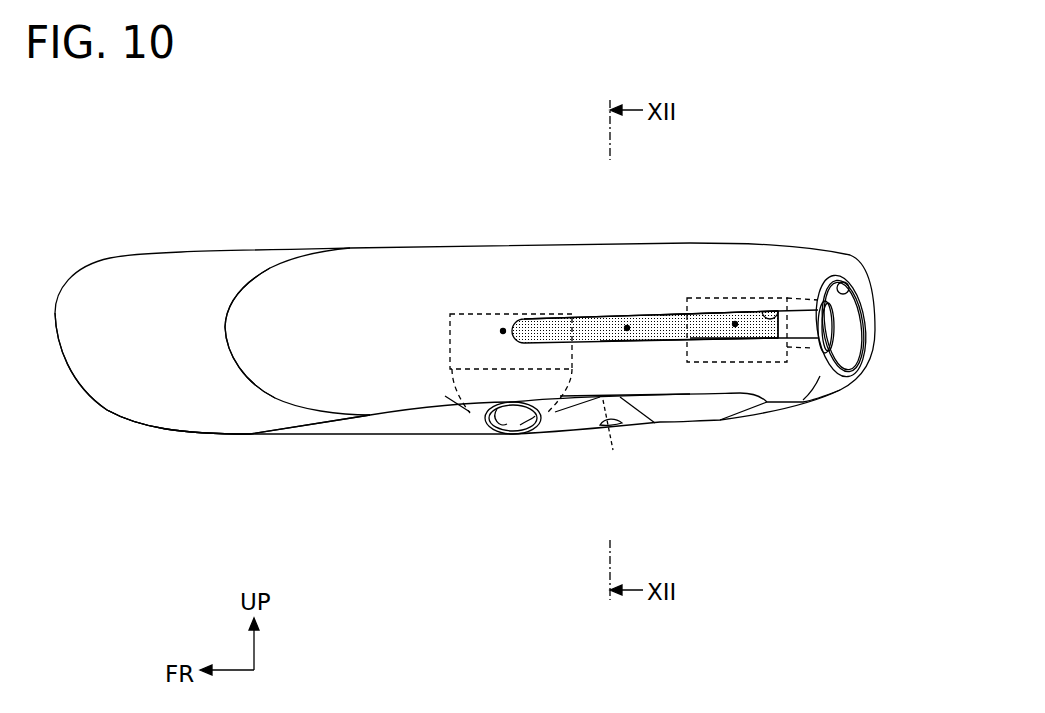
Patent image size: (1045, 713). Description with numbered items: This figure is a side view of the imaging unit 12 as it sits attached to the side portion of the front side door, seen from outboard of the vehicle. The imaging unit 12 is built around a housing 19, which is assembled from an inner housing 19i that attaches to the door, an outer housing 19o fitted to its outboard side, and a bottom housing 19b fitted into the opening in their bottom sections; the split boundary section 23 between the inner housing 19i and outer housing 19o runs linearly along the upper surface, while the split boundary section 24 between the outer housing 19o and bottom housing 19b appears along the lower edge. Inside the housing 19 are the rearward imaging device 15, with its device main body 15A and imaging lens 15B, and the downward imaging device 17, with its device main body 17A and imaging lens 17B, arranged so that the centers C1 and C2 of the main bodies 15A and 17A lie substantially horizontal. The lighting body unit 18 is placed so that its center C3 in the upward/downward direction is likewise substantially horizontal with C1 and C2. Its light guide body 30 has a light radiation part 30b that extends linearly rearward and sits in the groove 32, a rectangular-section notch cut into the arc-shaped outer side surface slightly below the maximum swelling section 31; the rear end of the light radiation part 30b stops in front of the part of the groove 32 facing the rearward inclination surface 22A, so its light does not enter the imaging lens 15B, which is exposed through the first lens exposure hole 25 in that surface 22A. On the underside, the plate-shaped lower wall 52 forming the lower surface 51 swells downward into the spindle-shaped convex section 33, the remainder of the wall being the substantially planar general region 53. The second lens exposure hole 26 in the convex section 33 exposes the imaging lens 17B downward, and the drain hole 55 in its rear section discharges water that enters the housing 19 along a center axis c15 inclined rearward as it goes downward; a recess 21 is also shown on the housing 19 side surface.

The imaging unit 12 is at (465, 325).
The rearward imaging device 15 is at (828, 343).
The device main body 15A is at (735, 363).
The imaging lens 15B is at (822, 346).
The downward imaging device 17 is at (522, 502).
The device main body 17A is at (472, 314).
The imaging lens 17B is at (528, 422).
The lighting body unit 18 is at (668, 339).
The housing 19 is at (465, 341).
The inner housing 19i is at (236, 262).
The outer housing 19o is at (492, 250).
The bottom housing 19b is at (403, 423).
The recess 21 is at (270, 352).
The rearward inclination surface 22A is at (874, 286).
The split boundary section 23 is at (280, 262).
The split boundary section 24 is at (375, 415).
The first lens exposure hole 25 is at (863, 337).
The second lens exposure hole 26 is at (503, 420).
The light guide body 30 is at (645, 358).
The light radiation part 30b is at (653, 313).
The maximum swelling section 31 is at (684, 312).
The groove 32 is at (770, 311).
The convex section 33 is at (570, 422).
The lower surface 51 is at (178, 422).
The lower wall 52 is at (217, 435).
The general region 53 is at (325, 433).
The drain hole 55 is at (607, 428).
The center C1 is at (735, 324).
The center C2 is at (503, 330).
The center C3 is at (627, 328).
The center axis c15 is at (610, 440).